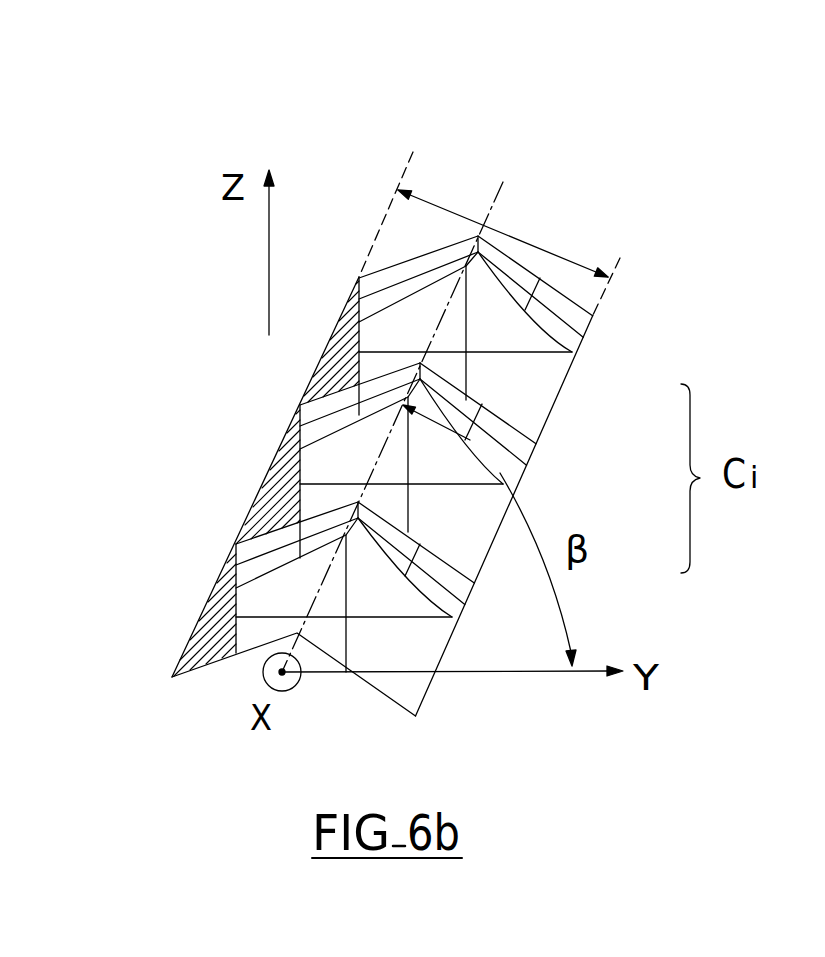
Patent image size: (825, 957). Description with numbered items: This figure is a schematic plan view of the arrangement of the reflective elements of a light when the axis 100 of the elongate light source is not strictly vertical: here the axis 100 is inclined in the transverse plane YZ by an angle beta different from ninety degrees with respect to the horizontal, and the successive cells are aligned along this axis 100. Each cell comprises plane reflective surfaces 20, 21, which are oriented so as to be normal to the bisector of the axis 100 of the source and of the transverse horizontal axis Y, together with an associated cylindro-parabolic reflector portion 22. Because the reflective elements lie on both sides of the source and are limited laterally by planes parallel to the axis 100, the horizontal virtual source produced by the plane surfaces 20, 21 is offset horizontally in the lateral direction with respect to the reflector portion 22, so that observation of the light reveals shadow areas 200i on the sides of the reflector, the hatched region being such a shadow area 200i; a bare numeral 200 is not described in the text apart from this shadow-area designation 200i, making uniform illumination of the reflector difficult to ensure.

The axis of the light source 100 is at (496, 202).
The plane reflective surface 20 is at (440, 452).
The plane reflective surface 21 is at (510, 442).
The cylindro-parabolic reflector portion 22 is at (352, 448).
The hub section 200 is at (268, 506).
The shadow area 200i is at (249, 477).